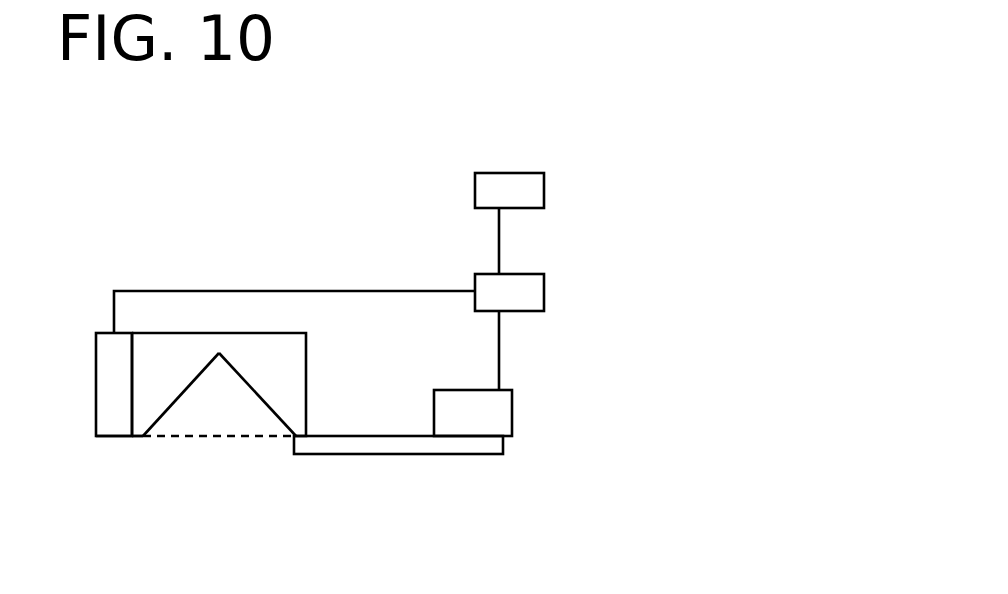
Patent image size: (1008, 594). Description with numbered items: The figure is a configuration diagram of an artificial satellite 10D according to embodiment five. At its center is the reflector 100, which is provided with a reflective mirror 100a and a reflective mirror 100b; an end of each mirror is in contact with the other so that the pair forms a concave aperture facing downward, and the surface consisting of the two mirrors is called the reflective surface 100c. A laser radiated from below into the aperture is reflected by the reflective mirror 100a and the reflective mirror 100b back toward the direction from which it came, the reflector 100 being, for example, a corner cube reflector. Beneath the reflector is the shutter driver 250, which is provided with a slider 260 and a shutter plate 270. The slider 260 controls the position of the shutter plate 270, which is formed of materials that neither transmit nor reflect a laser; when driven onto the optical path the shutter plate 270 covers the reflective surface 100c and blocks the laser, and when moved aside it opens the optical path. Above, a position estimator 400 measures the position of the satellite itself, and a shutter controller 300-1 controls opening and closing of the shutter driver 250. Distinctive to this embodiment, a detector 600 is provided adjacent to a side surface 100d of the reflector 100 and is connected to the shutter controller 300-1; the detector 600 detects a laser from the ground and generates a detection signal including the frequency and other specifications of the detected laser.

The artificial satellite 10D is at (375, 217).
The detector 600 is at (104, 340).
The reflector 100 is at (281, 434).
The reflective mirror 100a is at (168, 398).
The reflective mirror 100b is at (274, 398).
The reflective surface 100c is at (267, 498).
The side surface 100d is at (127, 420).
The position estimator 400 is at (544, 190).
The shutter controller 300-1 is at (544, 293).
The shutter driver 250 is at (570, 428).
The slider 260 is at (512, 411).
The shutter plate 270 is at (503, 446).